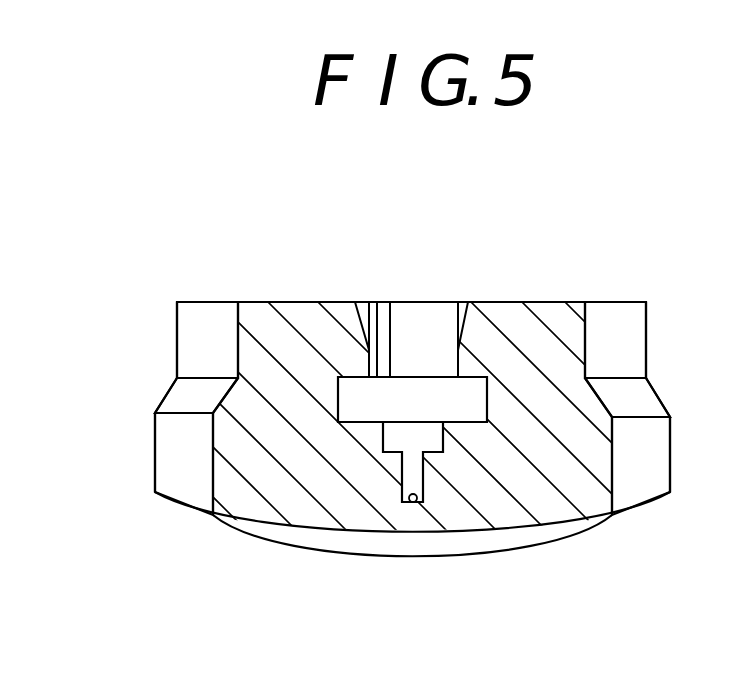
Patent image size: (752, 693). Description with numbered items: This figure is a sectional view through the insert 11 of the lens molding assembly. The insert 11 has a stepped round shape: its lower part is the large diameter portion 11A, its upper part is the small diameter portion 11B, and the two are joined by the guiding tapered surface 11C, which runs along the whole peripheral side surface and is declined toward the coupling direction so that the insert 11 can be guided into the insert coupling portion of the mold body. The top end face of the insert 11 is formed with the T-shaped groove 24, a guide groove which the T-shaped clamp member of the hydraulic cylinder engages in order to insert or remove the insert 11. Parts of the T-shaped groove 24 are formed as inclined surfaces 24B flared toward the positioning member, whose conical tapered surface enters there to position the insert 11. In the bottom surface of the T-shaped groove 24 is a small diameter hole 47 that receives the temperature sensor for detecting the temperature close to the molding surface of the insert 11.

The insert 11 is at (313, 513).
The large diameter portion 11A is at (170, 448).
The small diameter portion 11B is at (193, 323).
The guiding tapered surface 11C is at (175, 397).
The T-shaped groove 24 is at (450, 366).
The inclined surface 24B is at (378, 302).
The small diameter hole 47 is at (415, 505).